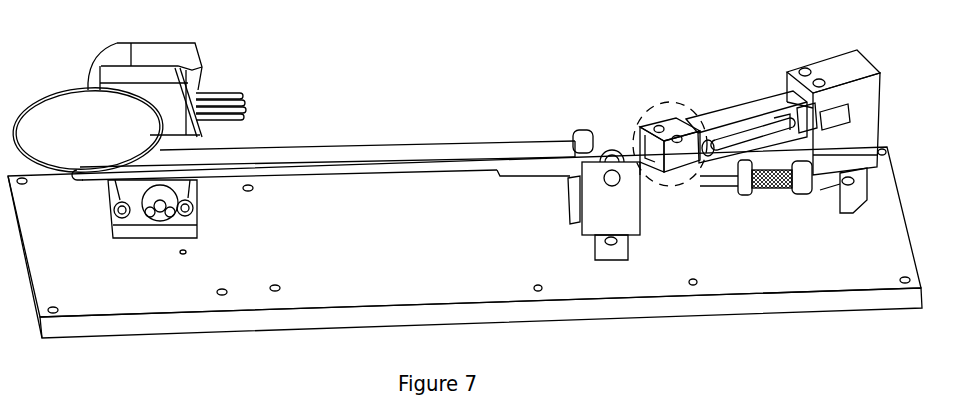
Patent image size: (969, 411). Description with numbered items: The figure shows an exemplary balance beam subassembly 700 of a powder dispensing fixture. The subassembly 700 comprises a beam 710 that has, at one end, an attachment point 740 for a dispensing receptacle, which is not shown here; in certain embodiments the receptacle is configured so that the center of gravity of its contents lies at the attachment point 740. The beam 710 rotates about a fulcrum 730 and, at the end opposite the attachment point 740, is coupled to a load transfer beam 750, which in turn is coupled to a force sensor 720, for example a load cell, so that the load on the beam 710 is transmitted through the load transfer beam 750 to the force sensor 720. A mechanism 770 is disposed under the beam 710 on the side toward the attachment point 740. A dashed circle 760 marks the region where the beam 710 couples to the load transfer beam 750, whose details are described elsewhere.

The balance beam subassembly 700 is at (353, 42).
The beam 710 is at (447, 153).
The force sensor 720 is at (828, 125).
The fulcrum 730 is at (608, 180).
The attachment point 740 is at (87, 155).
The load transfer beam 750 is at (718, 117).
The pivot region 760 is at (687, 188).
The mechanism 770 is at (138, 253).